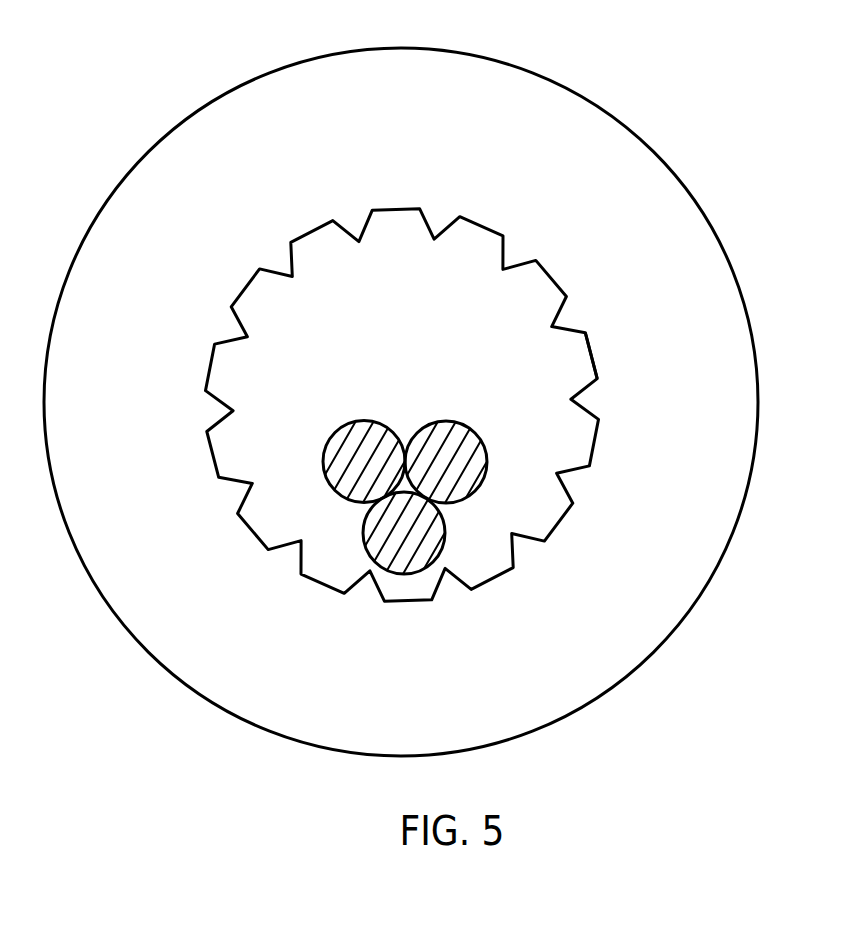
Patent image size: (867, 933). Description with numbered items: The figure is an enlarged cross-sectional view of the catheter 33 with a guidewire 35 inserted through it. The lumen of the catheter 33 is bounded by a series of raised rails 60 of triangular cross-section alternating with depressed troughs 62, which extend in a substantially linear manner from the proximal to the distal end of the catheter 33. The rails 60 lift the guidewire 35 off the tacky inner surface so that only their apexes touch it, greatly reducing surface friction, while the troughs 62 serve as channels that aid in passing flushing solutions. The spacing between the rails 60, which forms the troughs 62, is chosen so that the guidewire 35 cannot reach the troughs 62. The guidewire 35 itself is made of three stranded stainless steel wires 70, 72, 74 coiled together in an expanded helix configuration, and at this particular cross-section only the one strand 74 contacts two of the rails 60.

The catheter 33 is at (534, 72).
The guidewire 35 is at (329, 533).
The raised rails 60 is at (503, 268).
The troughs 62 is at (588, 351).
The stranded stainless steel wire 70 is at (381, 434).
The stranded stainless steel wire 72 is at (454, 434).
The strand 74 is at (436, 537).